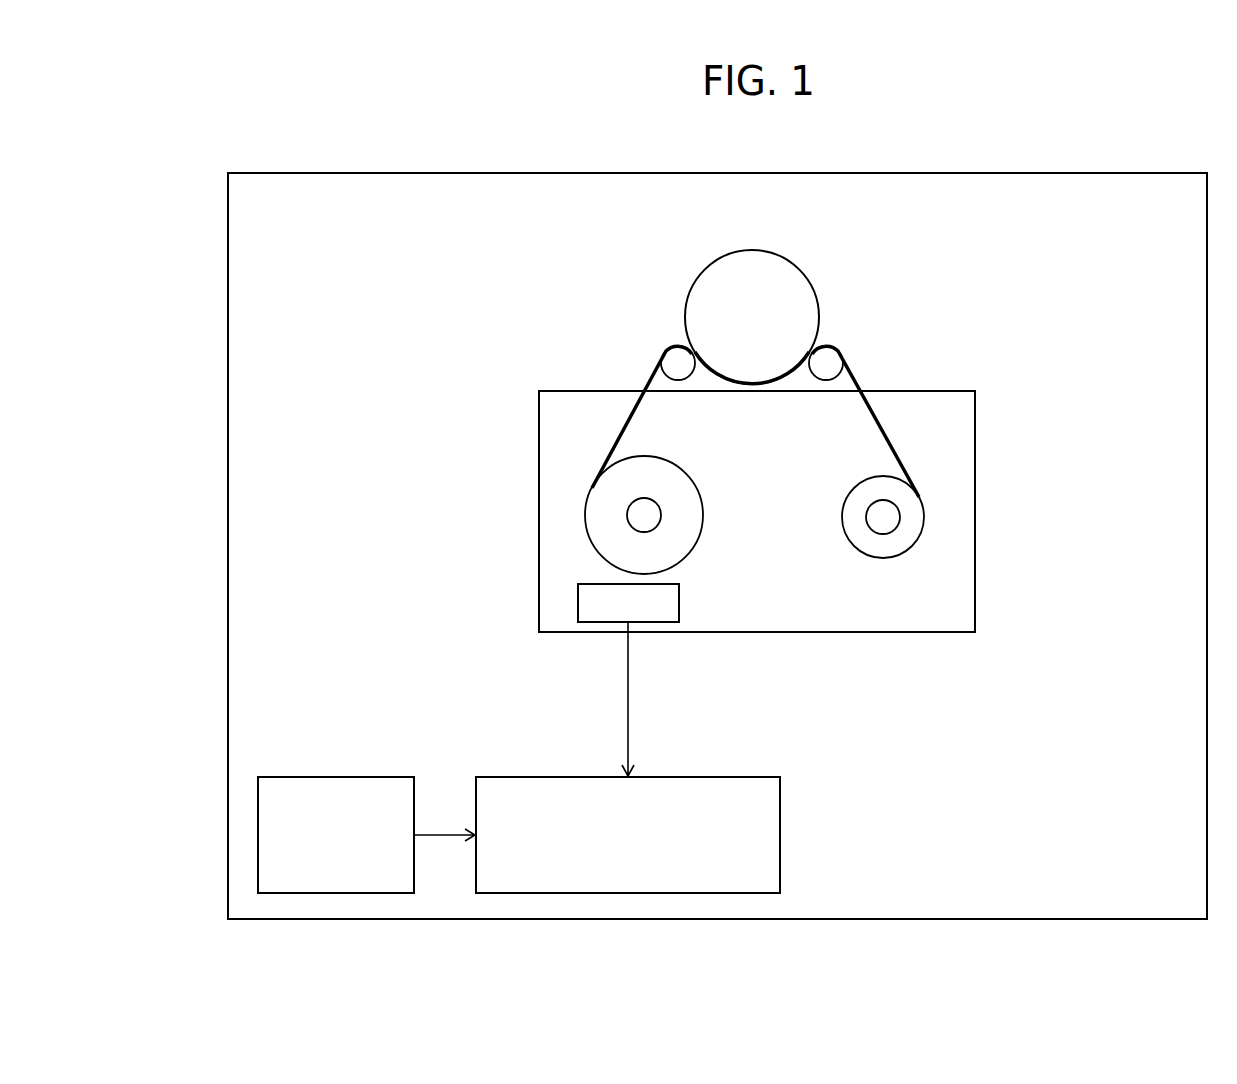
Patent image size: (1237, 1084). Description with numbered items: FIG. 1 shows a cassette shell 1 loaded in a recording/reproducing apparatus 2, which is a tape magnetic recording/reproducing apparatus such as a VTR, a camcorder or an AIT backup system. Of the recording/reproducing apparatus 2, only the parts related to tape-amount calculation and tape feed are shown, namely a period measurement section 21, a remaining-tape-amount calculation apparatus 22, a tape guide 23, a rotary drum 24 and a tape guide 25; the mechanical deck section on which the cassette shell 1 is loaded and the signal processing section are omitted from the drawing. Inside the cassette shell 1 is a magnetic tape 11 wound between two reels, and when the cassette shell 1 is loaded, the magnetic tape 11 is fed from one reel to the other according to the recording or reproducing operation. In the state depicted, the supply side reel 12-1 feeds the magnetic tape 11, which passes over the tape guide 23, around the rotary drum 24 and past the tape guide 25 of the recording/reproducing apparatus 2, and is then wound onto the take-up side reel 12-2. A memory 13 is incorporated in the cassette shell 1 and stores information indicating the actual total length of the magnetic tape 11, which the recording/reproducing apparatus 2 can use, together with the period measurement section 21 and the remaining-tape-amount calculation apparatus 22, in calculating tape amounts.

The cassette shell 1 is at (917, 391).
The recording/reproducing apparatus 2 is at (228, 540).
The magnetic tape 11 is at (890, 446).
The supply side reel 12-1 is at (628, 514).
The take-up side reel 12-2 is at (897, 526).
The memory 13 is at (680, 606).
The period measurement section 21 is at (340, 777).
The remaining-tape-amount calculation apparatus 22 is at (552, 777).
The tape guide 23 is at (680, 357).
The rotary drum 24 is at (752, 262).
The tape guide 25 is at (825, 357).